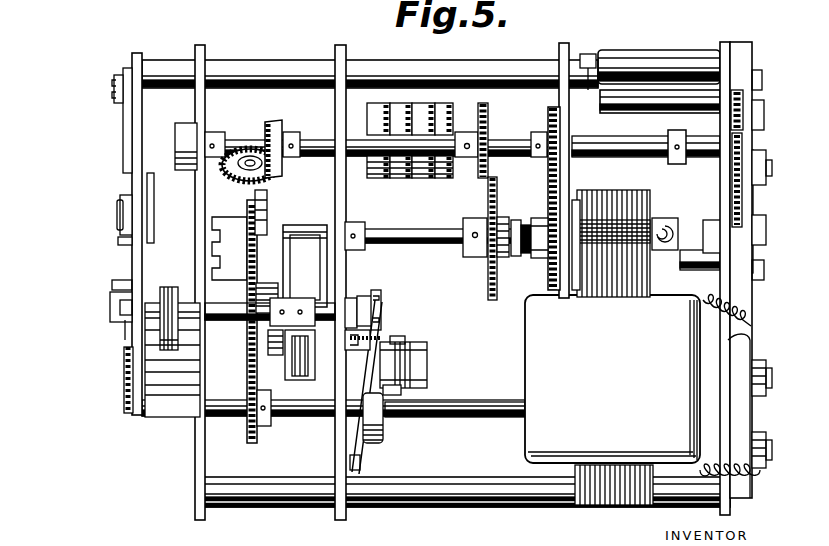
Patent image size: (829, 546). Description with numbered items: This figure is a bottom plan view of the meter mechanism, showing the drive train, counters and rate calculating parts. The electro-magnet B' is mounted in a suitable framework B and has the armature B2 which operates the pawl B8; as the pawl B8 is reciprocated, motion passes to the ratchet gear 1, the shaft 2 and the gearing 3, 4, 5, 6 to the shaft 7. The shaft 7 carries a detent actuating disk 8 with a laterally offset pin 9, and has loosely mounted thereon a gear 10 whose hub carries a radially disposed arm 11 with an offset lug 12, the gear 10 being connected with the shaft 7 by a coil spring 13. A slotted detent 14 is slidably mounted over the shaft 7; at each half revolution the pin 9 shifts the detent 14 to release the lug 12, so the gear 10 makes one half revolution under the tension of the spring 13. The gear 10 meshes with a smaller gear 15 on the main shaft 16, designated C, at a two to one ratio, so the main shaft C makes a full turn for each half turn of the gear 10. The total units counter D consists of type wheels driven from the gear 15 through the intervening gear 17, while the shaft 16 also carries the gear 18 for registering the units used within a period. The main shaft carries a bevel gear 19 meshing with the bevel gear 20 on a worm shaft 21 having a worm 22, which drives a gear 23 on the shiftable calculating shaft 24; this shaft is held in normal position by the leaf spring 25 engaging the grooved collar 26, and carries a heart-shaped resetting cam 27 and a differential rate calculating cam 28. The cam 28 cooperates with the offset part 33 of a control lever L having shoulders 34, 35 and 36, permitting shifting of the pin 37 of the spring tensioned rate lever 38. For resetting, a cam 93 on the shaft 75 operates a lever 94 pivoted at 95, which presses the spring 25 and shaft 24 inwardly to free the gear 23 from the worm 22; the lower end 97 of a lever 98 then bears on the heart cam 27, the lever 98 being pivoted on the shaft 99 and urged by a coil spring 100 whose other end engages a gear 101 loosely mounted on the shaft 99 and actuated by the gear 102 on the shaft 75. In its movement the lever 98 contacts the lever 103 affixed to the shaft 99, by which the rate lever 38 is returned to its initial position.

The ratchet gear 1 is at (612, 60).
The shaft 2 is at (732, 6).
The gearing 3 is at (735, 122).
The gearing 4 is at (735, 158).
The gearing 5 is at (745, 178).
The gearing 6 is at (702, 323).
The shaft 7 is at (398, 232).
The detent actuating disk 8 is at (488, 197).
The laterally offset pin 9 is at (488, 270).
The gear 10 is at (548, 190).
The radially disposed arm 11 is at (531, 218).
The offset lug 12 is at (512, 258).
The coil spring 13 is at (660, 215).
The detent 14 is at (470, 218).
The gear 15 is at (548, 108).
The main shaft 16 is at (505, 143).
The intervening gear 17 is at (483, 102).
The gear 18 is at (668, 127).
The bevel gear 19 is at (276, 122).
The bevel gear 20 is at (245, 148).
The worm shaft 21 is at (258, 220).
The worm 22 is at (272, 296).
The gear 23 is at (240, 236).
The shiftable calculating shaft 24 is at (218, 304).
The leaf spring 25 is at (378, 334).
The grooved collar 26 is at (381, 300).
The heart-shaped resetting cam 27 is at (362, 300).
The differential rate calculating cam 28 is at (124, 395).
The offset part 33 is at (116, 296).
The shoulder 34 is at (125, 350).
The shoulder 35 is at (122, 282).
The shoulder 36 is at (118, 222).
The pin 37 is at (118, 242).
The rate lever 38 is at (155, 210).
The shaft 75 is at (484, 420).
The cam 93 is at (385, 430).
The lever 94 is at (422, 351).
The pivot 95 is at (402, 392).
The lower end of lever 97 is at (303, 230).
The lever 98 is at (359, 226).
The shaft 99 is at (316, 380).
The coil spring 100 is at (278, 420).
The gear 101 is at (247, 405).
The gear 102 is at (248, 440).
The lever 103 is at (275, 345).
The control lever L is at (122, 125).
The main shaft C is at (352, 220).
The total units counter D is at (391, 95).
The electro-magnet framework B is at (507, 344).
The electro-magnet B' is at (612, 379).
The armature B2 is at (611, 229).
The pawl B8 is at (588, 58).